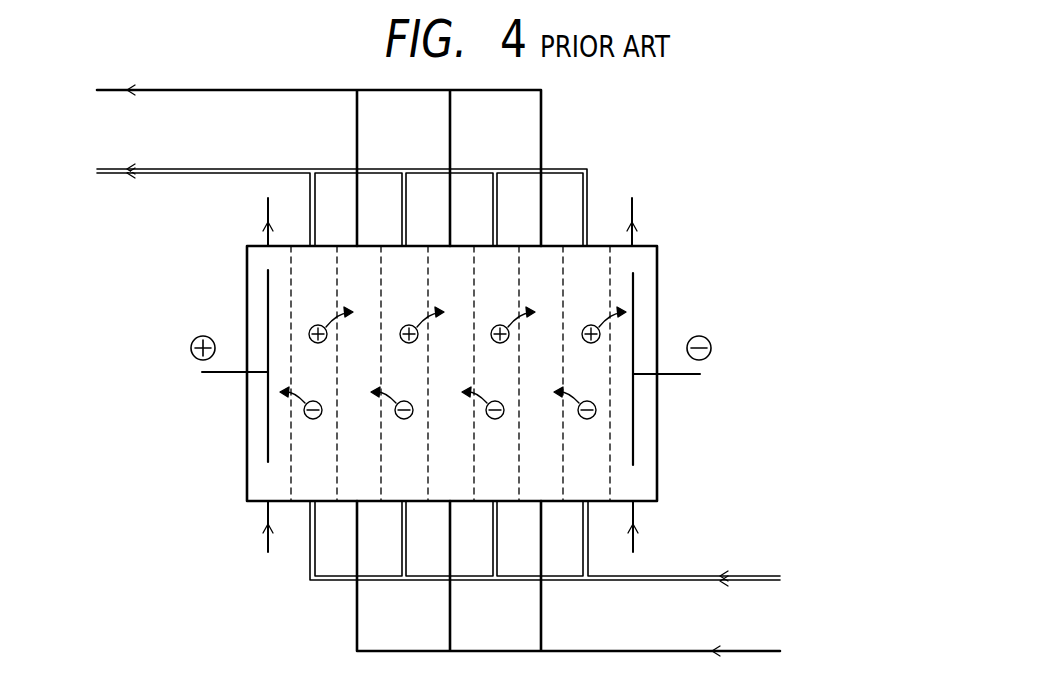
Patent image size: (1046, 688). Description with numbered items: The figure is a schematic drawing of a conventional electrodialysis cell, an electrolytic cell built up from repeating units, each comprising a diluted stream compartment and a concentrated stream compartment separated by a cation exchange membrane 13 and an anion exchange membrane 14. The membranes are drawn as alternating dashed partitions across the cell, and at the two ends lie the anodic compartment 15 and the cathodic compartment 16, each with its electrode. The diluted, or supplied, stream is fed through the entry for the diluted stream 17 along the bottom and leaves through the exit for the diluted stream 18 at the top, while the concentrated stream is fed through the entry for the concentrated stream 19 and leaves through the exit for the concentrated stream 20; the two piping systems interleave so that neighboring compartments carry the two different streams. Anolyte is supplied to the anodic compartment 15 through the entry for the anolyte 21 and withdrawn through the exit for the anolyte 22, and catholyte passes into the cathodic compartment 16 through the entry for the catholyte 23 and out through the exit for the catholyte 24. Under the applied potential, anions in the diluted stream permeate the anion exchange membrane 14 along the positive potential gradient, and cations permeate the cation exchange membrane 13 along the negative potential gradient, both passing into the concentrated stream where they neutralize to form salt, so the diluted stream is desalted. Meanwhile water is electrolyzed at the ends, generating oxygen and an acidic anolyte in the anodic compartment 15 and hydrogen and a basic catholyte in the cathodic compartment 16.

The cation exchange membrane 13 is at (290, 469).
The anion exchange membrane 14 is at (337, 474).
The anodic compartment 15 is at (256, 306).
The cathodic compartment 16 is at (644, 302).
The entry for the diluted stream 17 is at (561, 546).
The exit for the diluted stream 18 is at (325, 201).
The entry for the concentrated stream 19 is at (585, 583).
The exit for the concentrated stream 20 is at (300, 158).
The entry for the anolyte 21 is at (253, 532).
The exit for the anolyte 22 is at (253, 218).
The entry for the catholyte 23 is at (649, 532).
The exit for the catholyte 24 is at (646, 218).